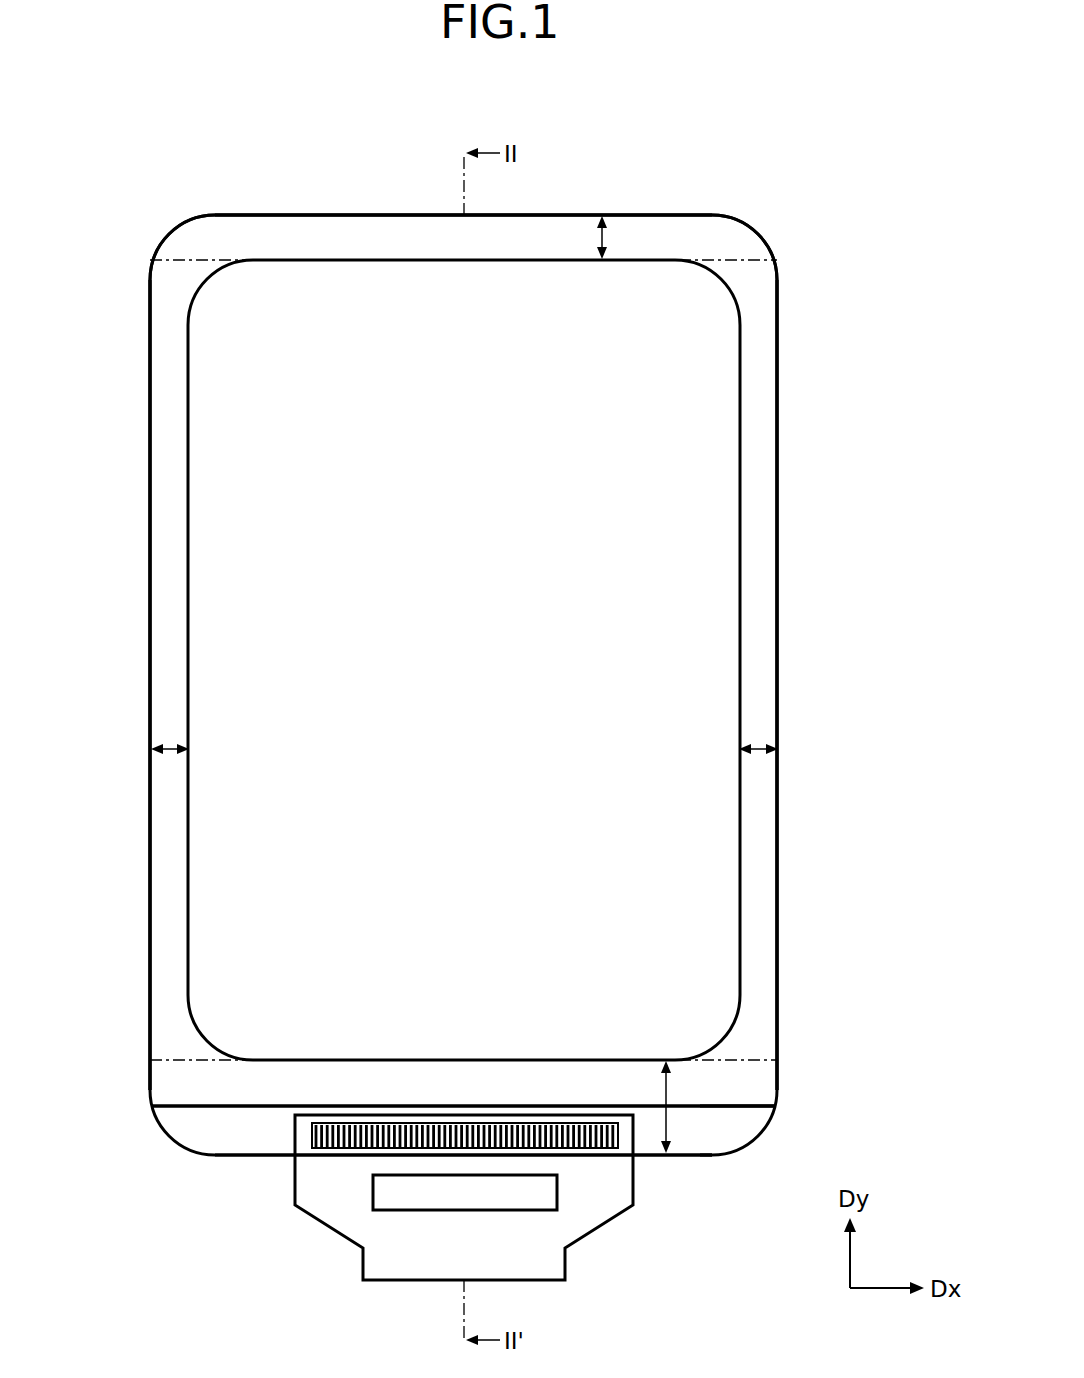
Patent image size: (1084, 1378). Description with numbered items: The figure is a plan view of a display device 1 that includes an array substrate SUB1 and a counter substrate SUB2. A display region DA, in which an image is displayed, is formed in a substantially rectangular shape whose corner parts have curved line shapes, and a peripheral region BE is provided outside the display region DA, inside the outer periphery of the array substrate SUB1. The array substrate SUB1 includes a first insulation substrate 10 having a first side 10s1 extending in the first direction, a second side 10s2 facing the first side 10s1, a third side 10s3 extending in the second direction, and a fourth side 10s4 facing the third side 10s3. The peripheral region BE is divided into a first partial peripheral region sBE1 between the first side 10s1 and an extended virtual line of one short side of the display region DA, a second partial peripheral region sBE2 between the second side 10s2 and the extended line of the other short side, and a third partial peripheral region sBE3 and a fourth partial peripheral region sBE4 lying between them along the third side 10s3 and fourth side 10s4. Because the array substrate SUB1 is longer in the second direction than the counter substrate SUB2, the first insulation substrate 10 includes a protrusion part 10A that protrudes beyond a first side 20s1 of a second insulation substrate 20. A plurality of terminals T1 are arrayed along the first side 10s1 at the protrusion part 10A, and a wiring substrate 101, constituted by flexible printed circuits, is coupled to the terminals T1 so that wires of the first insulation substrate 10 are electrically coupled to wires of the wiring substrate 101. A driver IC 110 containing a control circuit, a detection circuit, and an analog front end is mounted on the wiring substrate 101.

The display device 1 is at (786, 163).
The first insulation substrate 10 is at (257, 1156).
The protrusion part 10A is at (205, 1133).
The first side 10s1 is at (217, 1156).
The second side 10s2 is at (296, 214).
The third side 10s3 is at (151, 690).
The fourth side 10s4 is at (778, 695).
The second insulation substrate 20 is at (777, 1030).
The first side 20s1 is at (200, 1108).
The display region DA is at (741, 594).
The peripheral region BE is at (778, 650).
The first partial peripheral region sBE1 is at (668, 1128).
The second partial peripheral region sBE2 is at (606, 237).
The third partial peripheral region sBE3 is at (172, 748).
The fourth partial peripheral region sBE4 is at (760, 747).
The array substrate SUB1 is at (727, 1156).
The counter substrate SUB2 is at (732, 1107).
The terminals T1 is at (618, 1133).
The wiring substrate 101 is at (612, 1224).
The driver IC 110 is at (557, 1195).